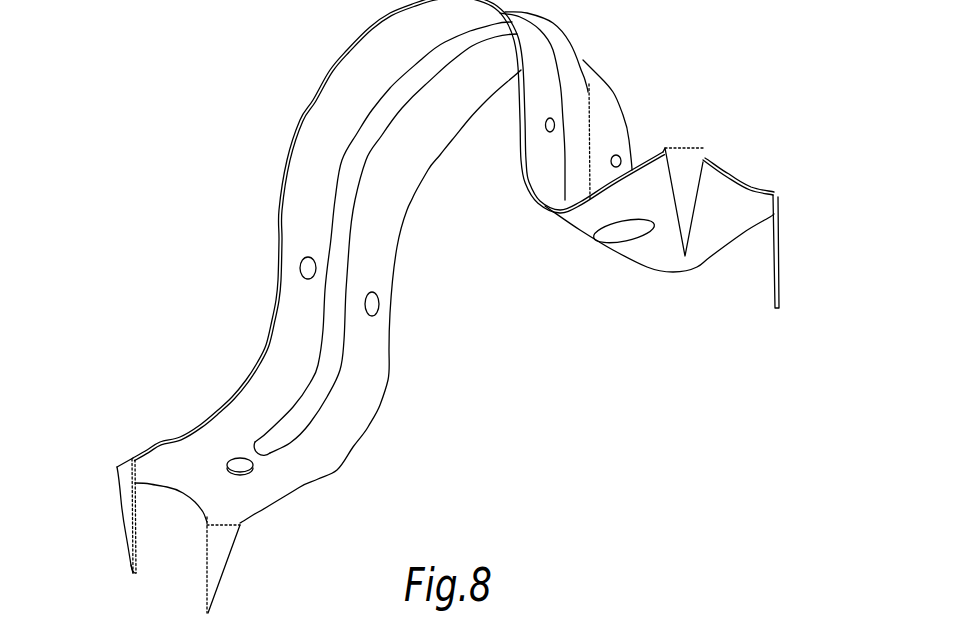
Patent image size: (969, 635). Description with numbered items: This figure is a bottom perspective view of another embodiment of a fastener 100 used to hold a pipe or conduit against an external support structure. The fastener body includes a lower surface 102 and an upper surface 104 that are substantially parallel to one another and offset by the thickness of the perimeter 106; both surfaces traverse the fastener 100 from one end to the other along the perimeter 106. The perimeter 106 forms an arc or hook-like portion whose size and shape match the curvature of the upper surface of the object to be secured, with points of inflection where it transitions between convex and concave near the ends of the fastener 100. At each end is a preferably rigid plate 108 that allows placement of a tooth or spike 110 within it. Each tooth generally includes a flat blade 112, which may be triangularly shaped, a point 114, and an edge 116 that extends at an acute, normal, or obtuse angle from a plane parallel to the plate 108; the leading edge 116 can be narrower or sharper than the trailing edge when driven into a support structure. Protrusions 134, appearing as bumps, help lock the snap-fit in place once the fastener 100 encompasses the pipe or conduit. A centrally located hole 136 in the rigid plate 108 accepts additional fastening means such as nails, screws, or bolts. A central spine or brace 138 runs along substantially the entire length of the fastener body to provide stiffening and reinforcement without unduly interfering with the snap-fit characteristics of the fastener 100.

The fastener 100 is at (450, 309).
The lower surface 102 is at (436, 264).
The upper surface 104 is at (622, 142).
The perimeter 106 is at (297, 143).
The plate 108 is at (702, 247).
The tooth or spike 110 is at (450, 388).
The flat blade 112 is at (127, 517).
The point 114 is at (133, 578).
The edge 116 is at (138, 530).
The protrusion 134 is at (556, 120).
The hole 136 is at (250, 468).
The central spine or brace 138 is at (377, 127).